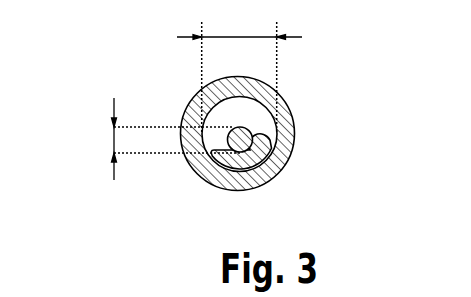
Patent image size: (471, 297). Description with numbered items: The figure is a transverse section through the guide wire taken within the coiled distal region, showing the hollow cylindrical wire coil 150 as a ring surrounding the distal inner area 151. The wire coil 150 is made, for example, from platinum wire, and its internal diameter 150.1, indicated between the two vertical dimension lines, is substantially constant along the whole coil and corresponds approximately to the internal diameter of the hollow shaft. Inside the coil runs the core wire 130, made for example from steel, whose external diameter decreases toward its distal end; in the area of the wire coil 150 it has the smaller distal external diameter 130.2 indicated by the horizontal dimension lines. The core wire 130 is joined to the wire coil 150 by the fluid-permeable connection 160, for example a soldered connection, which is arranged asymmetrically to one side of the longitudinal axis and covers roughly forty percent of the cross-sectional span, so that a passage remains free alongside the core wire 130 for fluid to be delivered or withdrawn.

The wire coil 150 is at (214, 187).
The distal inner area 151 is at (233, 112).
The internal diameter 150.1 is at (302, 37).
The core wire 130 is at (243, 132).
The distal external diameter 130.2 is at (114, 180).
The fluid-permeable connection 160 is at (247, 158).